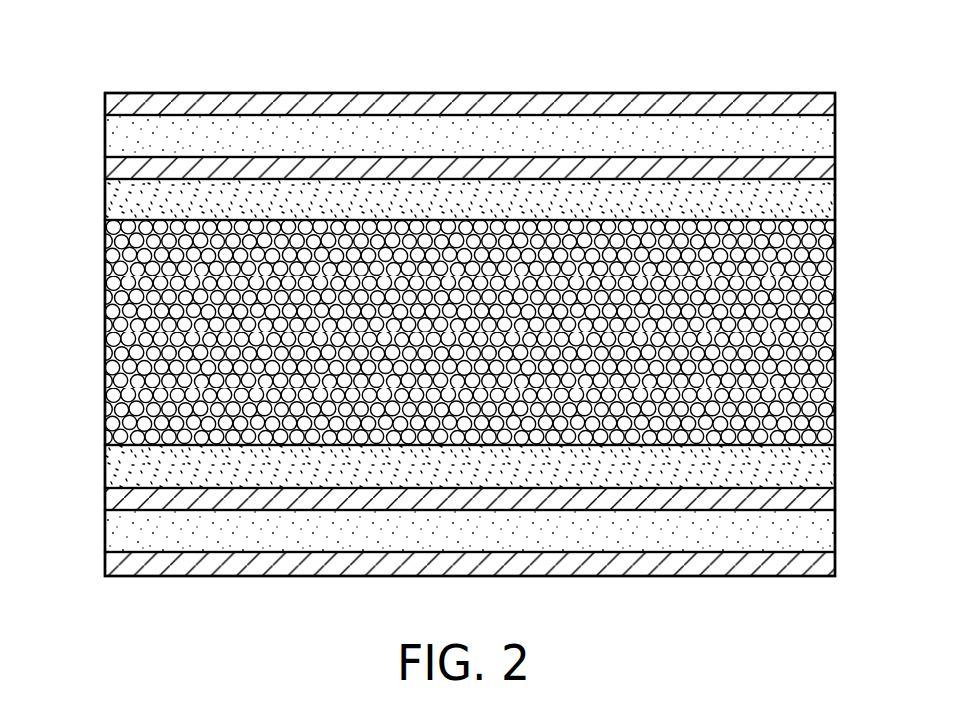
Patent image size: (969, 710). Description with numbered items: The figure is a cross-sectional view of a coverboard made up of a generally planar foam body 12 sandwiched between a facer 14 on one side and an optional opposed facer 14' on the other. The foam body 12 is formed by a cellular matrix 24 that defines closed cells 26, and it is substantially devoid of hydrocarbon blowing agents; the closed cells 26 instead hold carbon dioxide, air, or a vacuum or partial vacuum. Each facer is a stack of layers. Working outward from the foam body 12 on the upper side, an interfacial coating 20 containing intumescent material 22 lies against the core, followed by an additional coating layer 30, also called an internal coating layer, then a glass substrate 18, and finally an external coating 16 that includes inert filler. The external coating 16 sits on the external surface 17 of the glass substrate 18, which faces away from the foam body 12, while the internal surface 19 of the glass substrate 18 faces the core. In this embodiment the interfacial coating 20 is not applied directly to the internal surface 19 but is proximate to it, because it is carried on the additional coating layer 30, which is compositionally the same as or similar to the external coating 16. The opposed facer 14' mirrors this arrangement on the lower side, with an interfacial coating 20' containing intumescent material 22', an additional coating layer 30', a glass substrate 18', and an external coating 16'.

The foam body 12 is at (849, 323).
The facer 14 is at (505, 136).
The external coating 16 is at (442, 66).
The external surface 17 is at (748, 99).
The glass substrate 18 is at (432, 108).
The internal surface 19 is at (683, 165).
The interfacial coating 20 is at (428, 199).
The intumescent material 22 is at (470, 113).
The cellular matrix 24 is at (104, 267).
The closed cells 26 is at (104, 308).
The additional coating layer 30 is at (430, 151).
The interfacial coating 20' is at (434, 457).
The additional coating layer 30' is at (431, 490).
The glass substrate 18' is at (434, 528).
The external coating 16' is at (433, 570).
The opposed facer 14' is at (505, 532).
The intumescent material 22' is at (470, 549).